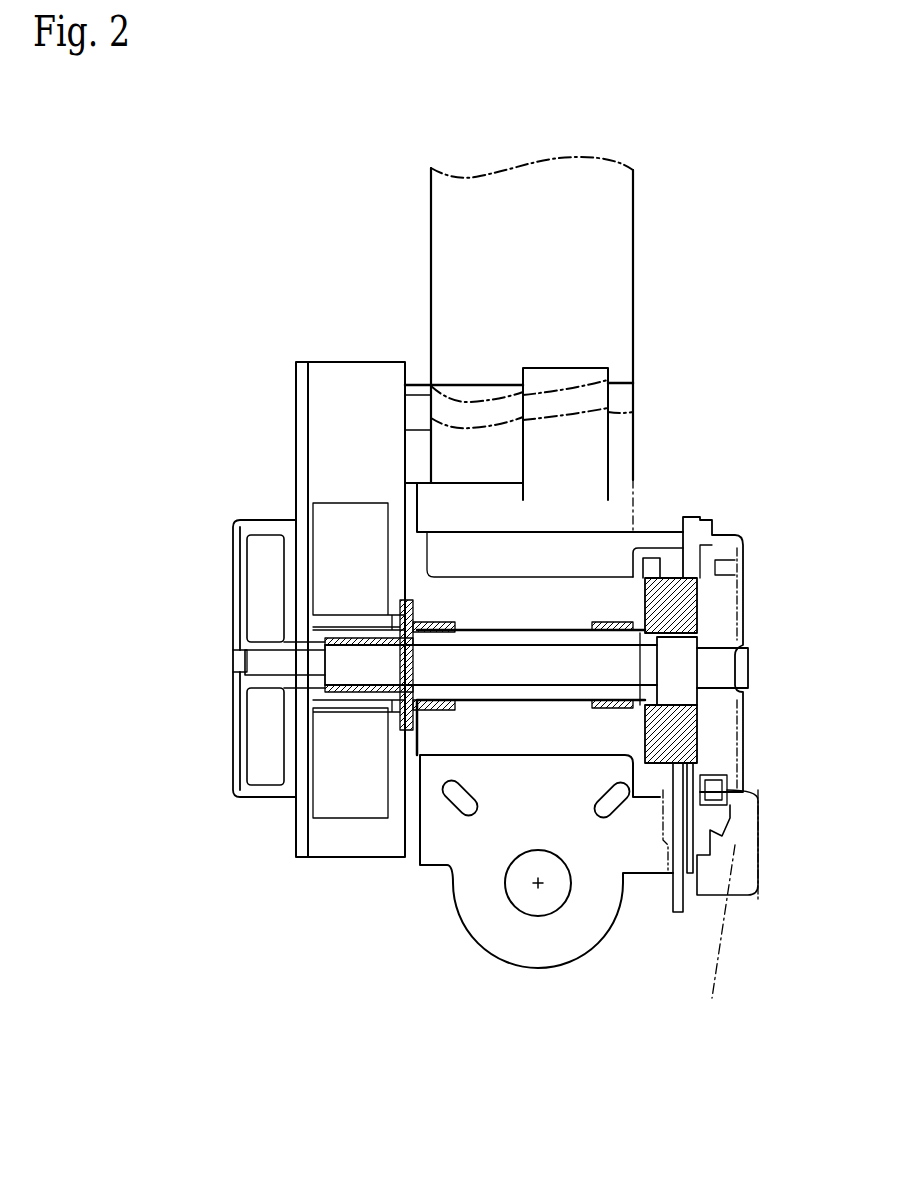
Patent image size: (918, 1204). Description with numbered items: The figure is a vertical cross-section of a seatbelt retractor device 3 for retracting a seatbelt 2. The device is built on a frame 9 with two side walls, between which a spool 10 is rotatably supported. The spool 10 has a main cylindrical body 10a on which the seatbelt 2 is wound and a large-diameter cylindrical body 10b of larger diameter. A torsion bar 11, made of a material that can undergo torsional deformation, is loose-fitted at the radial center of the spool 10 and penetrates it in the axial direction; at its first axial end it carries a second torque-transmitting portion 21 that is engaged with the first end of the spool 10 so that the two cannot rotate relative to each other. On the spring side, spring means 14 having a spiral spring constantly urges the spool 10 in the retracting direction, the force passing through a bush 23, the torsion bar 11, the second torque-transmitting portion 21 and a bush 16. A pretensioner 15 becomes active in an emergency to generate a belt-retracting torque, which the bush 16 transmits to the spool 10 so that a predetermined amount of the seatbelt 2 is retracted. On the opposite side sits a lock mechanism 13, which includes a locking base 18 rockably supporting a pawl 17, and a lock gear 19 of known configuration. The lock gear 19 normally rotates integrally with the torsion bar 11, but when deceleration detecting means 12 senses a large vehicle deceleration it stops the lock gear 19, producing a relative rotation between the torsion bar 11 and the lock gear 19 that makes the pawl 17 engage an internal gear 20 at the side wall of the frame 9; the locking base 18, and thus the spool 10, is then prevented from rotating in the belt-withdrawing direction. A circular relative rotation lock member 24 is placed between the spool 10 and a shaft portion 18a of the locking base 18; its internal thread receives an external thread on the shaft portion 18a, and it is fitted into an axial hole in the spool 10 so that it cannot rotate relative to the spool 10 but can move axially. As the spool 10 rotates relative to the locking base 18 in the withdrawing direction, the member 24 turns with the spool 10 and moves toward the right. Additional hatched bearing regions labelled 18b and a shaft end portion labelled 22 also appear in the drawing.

The seatbelt 2 is at (633, 445).
The retractor device 3 is at (222, 417).
The frame 9 is at (468, 918).
The spool 10 is at (438, 562).
The main cylindrical body 10a is at (515, 530).
The large-diameter cylindrical body 10b is at (690, 545).
The torsion bar 11 is at (483, 665).
The deceleration detecting means 12 is at (716, 931).
The lock mechanism 13 is at (732, 512).
The spring means 14 is at (232, 800).
The pretensioner 15 is at (633, 475).
The bush 16 is at (405, 620).
The pawl 17 is at (677, 862).
The locking base 18 is at (700, 603).
The shaft portion of the locking base 18a is at (590, 708).
The bearing outer ring 18b is at (648, 603).
The lock gear 19 is at (735, 832).
The internal gear 20 is at (745, 790).
The second torque-transmitting portion 21 is at (385, 705).
The shaft end 22 is at (755, 652).
The bush 23 is at (233, 702).
The circular relative rotation lock member 24 is at (600, 625).